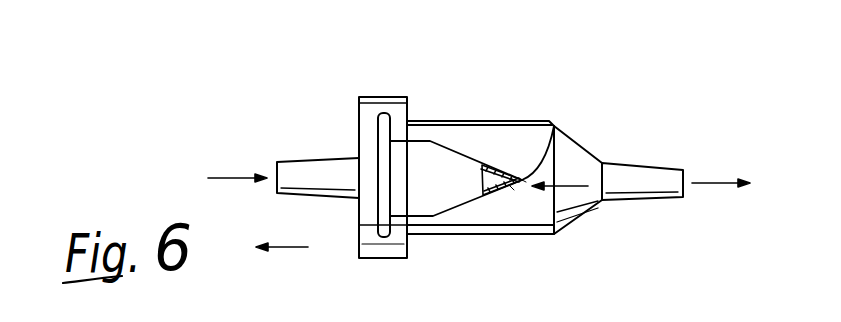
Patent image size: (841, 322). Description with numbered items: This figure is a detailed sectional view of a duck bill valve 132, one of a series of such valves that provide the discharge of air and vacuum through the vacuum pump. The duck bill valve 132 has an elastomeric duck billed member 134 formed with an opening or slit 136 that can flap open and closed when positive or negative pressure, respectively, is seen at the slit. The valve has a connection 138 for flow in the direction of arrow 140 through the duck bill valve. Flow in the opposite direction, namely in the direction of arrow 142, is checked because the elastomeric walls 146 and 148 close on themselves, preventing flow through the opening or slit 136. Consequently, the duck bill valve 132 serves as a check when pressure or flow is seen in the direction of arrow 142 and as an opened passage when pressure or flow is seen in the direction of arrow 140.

The duck bill valve 132 is at (512, 123).
The elastomeric duck billed member 134 is at (458, 210).
The opening or slit 136 is at (526, 182).
The connection 138 is at (643, 173).
The arrow indicating forward flow direction 140 is at (225, 175).
The arrow indicating reverse flow direction 142 is at (298, 248).
The elastomeric wall 146 is at (483, 196).
The elastomeric wall 148 is at (512, 188).